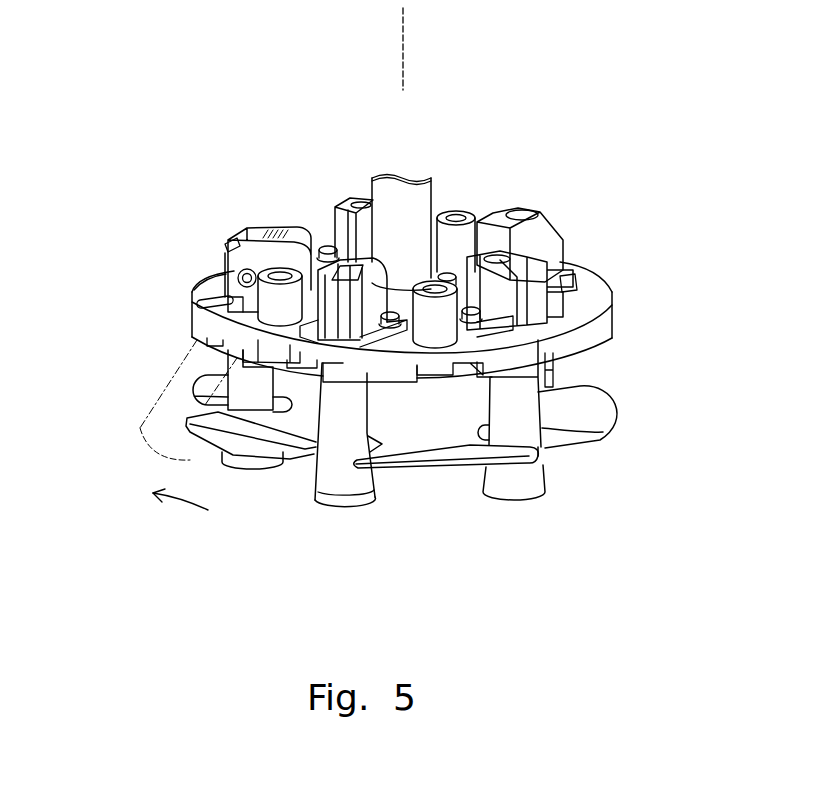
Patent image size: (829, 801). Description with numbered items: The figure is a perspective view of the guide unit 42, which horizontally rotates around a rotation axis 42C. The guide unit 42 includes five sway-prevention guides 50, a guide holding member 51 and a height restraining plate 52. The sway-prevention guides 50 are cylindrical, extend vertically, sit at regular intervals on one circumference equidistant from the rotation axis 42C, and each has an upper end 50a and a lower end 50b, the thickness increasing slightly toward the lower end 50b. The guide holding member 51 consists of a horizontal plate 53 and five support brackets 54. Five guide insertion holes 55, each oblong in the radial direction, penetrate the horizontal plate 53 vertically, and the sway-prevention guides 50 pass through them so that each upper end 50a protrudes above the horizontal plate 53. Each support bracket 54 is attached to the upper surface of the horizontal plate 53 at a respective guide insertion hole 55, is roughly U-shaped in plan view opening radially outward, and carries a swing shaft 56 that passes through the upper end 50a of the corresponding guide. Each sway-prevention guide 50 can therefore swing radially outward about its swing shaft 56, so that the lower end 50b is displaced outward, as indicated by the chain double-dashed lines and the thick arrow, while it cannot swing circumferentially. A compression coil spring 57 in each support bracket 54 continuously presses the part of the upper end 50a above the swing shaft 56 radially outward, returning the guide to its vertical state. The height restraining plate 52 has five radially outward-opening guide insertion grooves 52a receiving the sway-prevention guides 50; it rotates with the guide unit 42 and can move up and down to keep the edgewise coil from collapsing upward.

The guide unit 42 is at (565, 150).
The rotation axis 42C is at (403, 65).
The sway-prevention guide 50 is at (549, 388).
The upper end 50a is at (235, 243).
The lower end 50b is at (252, 467).
The guide holding member 51 is at (215, 287).
The height restraining plate 52 is at (617, 417).
The guide insertion groove 52a is at (548, 446).
The horizontal plate 53 is at (600, 327).
The support bracket 54 is at (290, 236).
The guide insertion hole 55 is at (212, 302).
The swing shaft 56 is at (240, 275).
The compression coil spring 57 is at (275, 232).